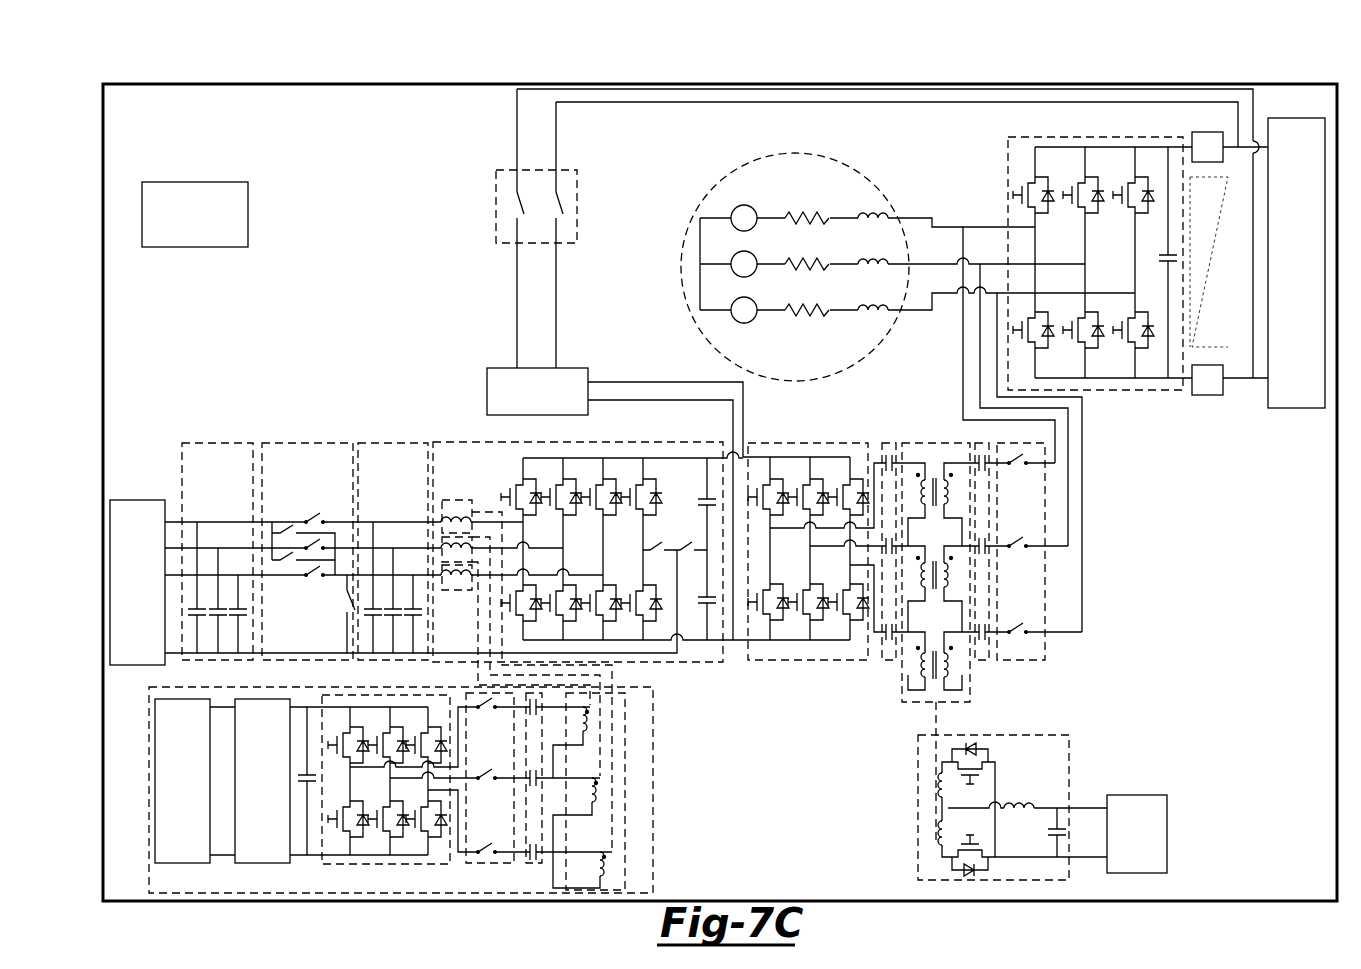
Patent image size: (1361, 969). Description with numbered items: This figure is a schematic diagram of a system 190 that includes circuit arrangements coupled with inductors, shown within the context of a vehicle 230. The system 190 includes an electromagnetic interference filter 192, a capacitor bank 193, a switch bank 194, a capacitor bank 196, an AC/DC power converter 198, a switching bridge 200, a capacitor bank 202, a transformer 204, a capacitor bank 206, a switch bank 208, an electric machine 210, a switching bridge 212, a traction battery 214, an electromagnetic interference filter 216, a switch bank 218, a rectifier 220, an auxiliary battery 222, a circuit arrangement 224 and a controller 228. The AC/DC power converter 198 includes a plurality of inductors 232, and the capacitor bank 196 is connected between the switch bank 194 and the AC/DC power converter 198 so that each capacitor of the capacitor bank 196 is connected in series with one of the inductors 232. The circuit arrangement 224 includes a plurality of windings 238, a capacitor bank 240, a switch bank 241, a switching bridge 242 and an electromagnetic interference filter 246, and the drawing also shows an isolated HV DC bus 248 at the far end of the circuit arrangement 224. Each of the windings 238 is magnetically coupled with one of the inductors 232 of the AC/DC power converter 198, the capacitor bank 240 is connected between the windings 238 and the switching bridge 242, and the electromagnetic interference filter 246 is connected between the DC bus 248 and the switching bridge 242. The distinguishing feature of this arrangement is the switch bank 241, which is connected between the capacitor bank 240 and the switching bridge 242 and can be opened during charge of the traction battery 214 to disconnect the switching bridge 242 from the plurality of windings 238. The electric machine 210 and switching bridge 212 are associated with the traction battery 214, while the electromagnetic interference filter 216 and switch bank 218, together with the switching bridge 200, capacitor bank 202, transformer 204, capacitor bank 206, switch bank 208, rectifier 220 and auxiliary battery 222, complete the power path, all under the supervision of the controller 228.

The system 190 is at (1233, 684).
The electromagnetic interference filter 192 is at (148, 500).
The capacitor bank 193 is at (221, 440).
The switch bank 194 is at (313, 440).
The capacitor bank 196 is at (397, 440).
The AC/DC power converter 198 is at (708, 667).
The switching bridge 200 is at (808, 664).
The capacitor bank 202 is at (892, 440).
The transformer 204 is at (938, 440).
The capacitor bank 206 is at (988, 664).
The switch bank 208 is at (1020, 664).
The electric machine 210 is at (683, 272).
The switching bridge 212 is at (1008, 150).
The traction battery 214 is at (1300, 410).
The electromagnetic interference filter 216 is at (505, 368).
The switch bank 218 is at (496, 210).
The rectifier 220 is at (1069, 753).
The auxiliary battery 222 is at (1167, 833).
The circuit arrangement 224 is at (653, 792).
The controller 228 is at (194, 182).
The vehicle 230 is at (722, 84).
The inductors 232 is at (458, 498).
The windings 238 is at (625, 847).
The capacitor bank 240 is at (531, 866).
The switch bank 241 is at (488, 866).
The switching bridge 242 is at (383, 866).
The electromagnetic interference filter 246 is at (262, 863).
The isolated HV DC bus 248 is at (182, 863).